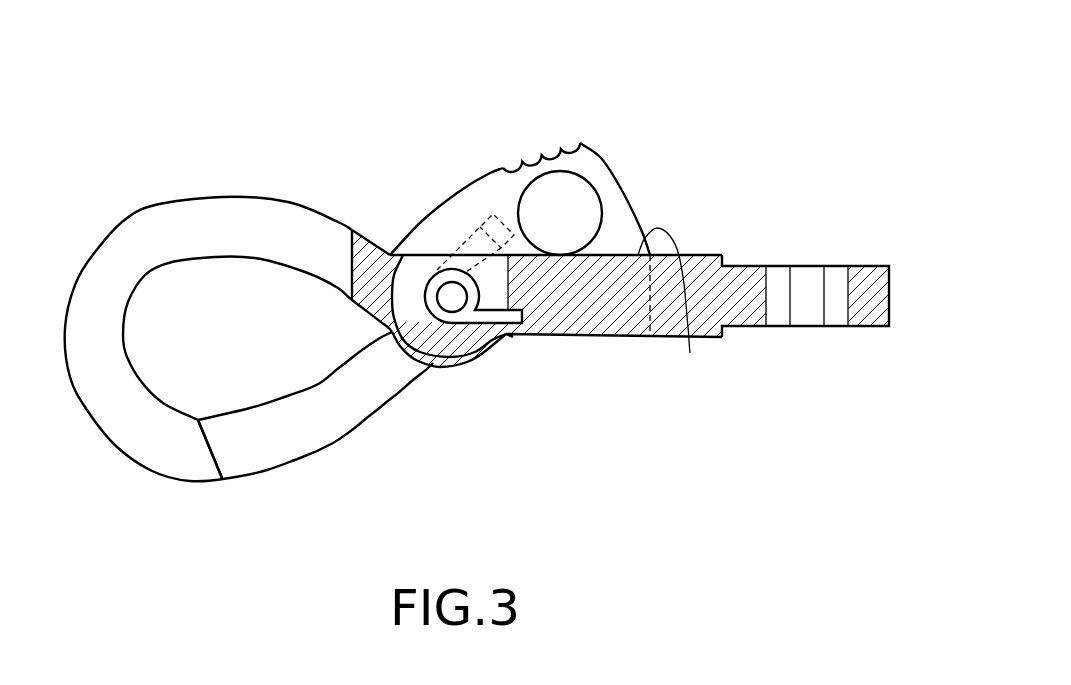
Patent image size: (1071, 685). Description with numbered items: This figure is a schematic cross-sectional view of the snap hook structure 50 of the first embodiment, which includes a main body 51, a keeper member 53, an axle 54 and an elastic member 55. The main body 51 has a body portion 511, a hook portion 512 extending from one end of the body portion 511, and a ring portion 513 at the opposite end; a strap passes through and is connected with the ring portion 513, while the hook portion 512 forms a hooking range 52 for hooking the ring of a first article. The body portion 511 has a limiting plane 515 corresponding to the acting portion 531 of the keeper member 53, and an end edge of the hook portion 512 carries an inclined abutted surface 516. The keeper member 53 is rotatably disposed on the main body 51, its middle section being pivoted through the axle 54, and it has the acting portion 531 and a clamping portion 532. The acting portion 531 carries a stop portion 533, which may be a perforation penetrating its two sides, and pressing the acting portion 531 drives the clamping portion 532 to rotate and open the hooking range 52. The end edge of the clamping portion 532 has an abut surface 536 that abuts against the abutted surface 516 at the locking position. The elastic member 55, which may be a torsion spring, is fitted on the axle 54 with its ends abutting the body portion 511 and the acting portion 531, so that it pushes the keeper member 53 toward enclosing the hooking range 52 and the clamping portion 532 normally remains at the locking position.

The snap hook structure 50 is at (854, 37).
The main body 51 is at (222, 65).
The body portion 511 is at (520, 258).
The hook portion 512 is at (222, 223).
The ring portion 513 is at (750, 265).
The limiting plane 515 is at (677, 308).
The abutted surface 516 is at (218, 463).
The hooking range 52 is at (162, 305).
The keeper member 53 is at (268, 508).
The acting portion 531 is at (422, 240).
The clamping portion 532 is at (295, 443).
The stop portion 533 is at (567, 223).
The abut surface 536 is at (205, 440).
The axle 54 is at (453, 298).
The elastic member 55 is at (488, 315).